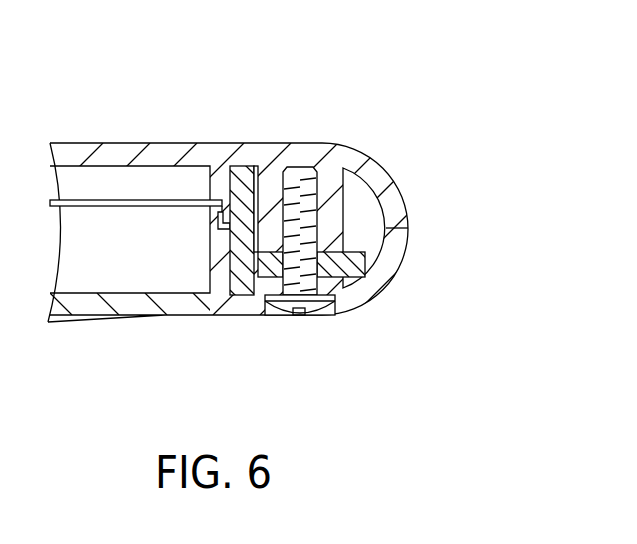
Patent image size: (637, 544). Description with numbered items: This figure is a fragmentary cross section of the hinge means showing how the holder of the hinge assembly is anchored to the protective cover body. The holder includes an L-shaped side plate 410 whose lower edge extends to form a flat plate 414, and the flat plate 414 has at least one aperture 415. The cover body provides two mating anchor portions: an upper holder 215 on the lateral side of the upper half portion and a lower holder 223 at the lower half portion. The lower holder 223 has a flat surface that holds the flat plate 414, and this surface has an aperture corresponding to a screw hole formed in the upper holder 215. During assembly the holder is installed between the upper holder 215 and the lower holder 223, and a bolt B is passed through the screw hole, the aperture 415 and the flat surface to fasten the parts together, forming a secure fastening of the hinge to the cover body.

The upper holder 215 is at (380, 173).
The lower holder 223 is at (362, 303).
The L-shaped side plate 410 is at (243, 175).
The flat plate 414 is at (254, 267).
The aperture 415 is at (325, 267).
The bolt B is at (317, 307).